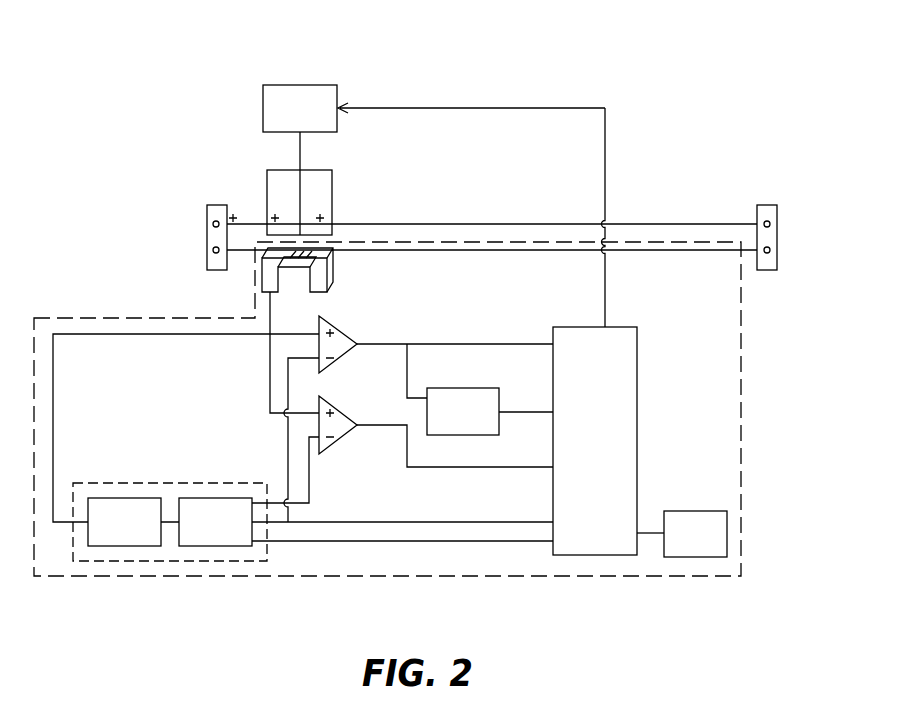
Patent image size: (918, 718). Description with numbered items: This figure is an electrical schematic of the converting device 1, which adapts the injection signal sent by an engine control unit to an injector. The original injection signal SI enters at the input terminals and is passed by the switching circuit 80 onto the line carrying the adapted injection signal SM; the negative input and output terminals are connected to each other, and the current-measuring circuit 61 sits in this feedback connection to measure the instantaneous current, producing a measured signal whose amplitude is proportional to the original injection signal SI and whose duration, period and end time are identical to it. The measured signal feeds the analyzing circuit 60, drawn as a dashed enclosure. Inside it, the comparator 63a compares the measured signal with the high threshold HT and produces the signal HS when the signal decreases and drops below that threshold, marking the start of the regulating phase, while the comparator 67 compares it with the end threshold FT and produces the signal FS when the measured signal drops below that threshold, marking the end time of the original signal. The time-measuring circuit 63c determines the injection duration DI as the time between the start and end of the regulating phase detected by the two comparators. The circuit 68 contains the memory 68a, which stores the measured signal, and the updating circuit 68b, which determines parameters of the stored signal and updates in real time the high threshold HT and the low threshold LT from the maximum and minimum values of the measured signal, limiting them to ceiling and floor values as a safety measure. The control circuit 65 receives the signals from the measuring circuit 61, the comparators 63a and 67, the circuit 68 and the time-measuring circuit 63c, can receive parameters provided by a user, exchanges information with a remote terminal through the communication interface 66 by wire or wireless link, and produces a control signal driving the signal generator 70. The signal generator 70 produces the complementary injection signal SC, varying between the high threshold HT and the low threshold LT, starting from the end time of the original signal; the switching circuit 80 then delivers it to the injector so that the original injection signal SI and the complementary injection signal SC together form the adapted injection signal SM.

The converting device 1 is at (799, 45).
The analyzing circuit 60 is at (745, 418).
The current-measuring circuit 61 is at (258, 278).
The comparator 63a is at (344, 331).
The time-measuring circuit 63c is at (463, 411).
The control circuit 65 is at (595, 441).
The communication interface 66 is at (682, 534).
The comparator 67 is at (340, 442).
The circuit comprising a memory and an updating circuit 68 is at (170, 497).
The memory 68a is at (124, 522).
The updating circuit 68b is at (215, 522).
The signal generator 70 is at (434, 108).
The switching circuit 80 is at (277, 168).
The complementary injection signal SC is at (303, 156).
The original injection signal SI is at (253, 216).
The adapted injection signal SM is at (352, 223).
The signal produced by the comparator 63a HS is at (455, 359).
The signal produced by the comparator 67 FS is at (455, 433).
The end threshold FT is at (293, 470).
The duration of the original injection signal DI is at (526, 399).
The high threshold HT is at (402, 509).
The low threshold LT is at (402, 554).